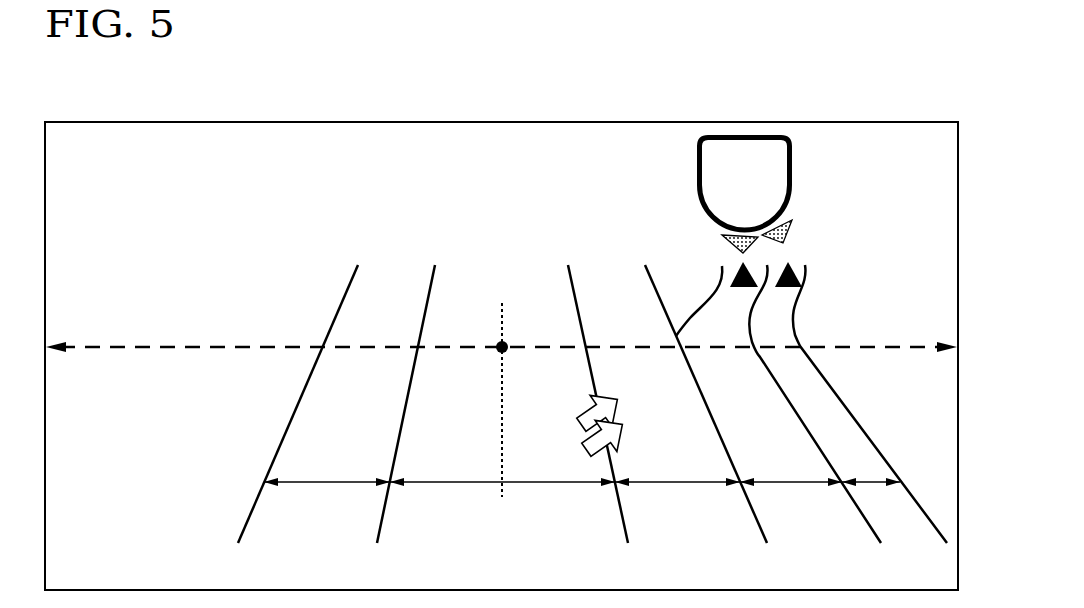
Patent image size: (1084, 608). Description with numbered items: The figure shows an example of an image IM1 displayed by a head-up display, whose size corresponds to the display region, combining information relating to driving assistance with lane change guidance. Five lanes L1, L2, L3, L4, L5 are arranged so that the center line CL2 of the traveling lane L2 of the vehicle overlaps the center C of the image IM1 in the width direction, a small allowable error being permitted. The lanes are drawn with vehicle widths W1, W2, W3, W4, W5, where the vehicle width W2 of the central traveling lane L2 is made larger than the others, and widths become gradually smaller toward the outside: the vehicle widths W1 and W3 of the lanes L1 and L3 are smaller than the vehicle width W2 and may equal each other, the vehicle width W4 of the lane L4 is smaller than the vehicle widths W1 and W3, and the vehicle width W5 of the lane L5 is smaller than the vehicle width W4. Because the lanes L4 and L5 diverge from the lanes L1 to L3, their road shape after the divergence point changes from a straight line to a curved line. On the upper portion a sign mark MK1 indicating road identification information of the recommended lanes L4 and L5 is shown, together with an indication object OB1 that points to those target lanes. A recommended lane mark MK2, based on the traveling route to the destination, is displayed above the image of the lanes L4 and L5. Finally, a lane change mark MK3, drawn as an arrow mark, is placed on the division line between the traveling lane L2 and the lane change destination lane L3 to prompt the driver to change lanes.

The image IM1 is at (916, 122).
The sign mark MK1 is at (758, 131).
The recommended lane mark MK2 is at (752, 299).
The lane change mark MK3 is at (575, 396).
The indication object OB1 is at (703, 242).
The center line CL2 is at (507, 304).
The center C is at (497, 352).
The lane L1 is at (326, 556).
The traveling lane L2 is at (519, 556).
The lane L3 is at (713, 556).
The recommended lane L4 is at (839, 556).
The recommended lane L5 is at (929, 556).
The vehicle width W1 is at (326, 479).
The vehicle width W2 is at (454, 479).
The vehicle width W3 is at (678, 479).
The vehicle width W4 is at (783, 479).
The vehicle width W5 is at (870, 479).